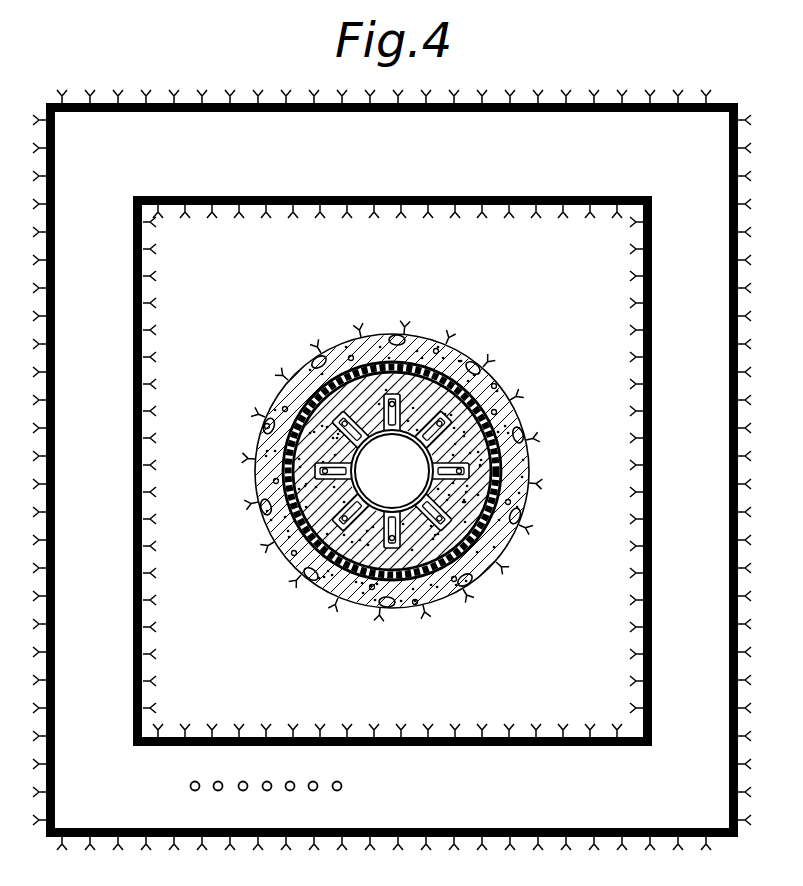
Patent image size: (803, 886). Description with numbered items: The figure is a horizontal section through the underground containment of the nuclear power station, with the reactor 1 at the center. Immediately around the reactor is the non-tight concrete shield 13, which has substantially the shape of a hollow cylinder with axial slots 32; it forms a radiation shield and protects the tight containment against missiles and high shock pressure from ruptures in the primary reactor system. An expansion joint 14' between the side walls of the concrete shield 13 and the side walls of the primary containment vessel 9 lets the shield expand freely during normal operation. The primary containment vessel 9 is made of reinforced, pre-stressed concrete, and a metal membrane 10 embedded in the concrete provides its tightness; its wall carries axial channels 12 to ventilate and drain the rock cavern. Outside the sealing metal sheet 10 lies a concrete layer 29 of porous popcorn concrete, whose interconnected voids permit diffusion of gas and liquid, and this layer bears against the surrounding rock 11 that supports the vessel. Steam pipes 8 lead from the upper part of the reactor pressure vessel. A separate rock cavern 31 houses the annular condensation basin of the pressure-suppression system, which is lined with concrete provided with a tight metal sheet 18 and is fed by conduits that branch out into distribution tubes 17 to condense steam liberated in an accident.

The reactor 1 is at (392, 471).
The steam pipes 8 is at (468, 372).
The primary containment vessel 9 is at (510, 460).
The metal membrane 10 is at (493, 437).
The rock 11 is at (577, 327).
The axial channels 12 is at (507, 476).
The concrete shield 13 is at (500, 418).
The expansion joint 14' is at (414, 471).
The distribution tubes 17 is at (340, 780).
The tight metal sheet 18 is at (616, 830).
The concrete layer 29 is at (485, 555).
The separate rock cavern 31 is at (457, 758).
The axial slots 32 is at (466, 574).